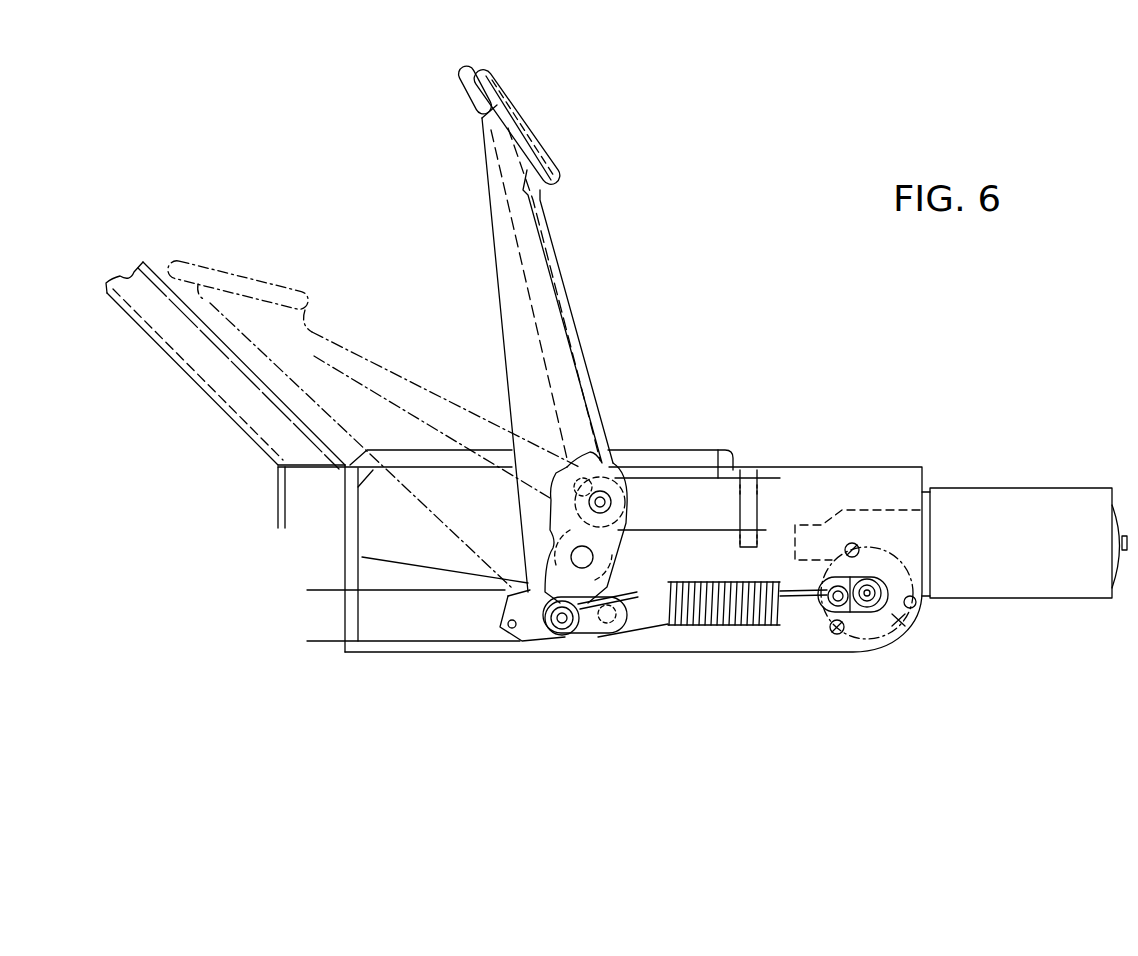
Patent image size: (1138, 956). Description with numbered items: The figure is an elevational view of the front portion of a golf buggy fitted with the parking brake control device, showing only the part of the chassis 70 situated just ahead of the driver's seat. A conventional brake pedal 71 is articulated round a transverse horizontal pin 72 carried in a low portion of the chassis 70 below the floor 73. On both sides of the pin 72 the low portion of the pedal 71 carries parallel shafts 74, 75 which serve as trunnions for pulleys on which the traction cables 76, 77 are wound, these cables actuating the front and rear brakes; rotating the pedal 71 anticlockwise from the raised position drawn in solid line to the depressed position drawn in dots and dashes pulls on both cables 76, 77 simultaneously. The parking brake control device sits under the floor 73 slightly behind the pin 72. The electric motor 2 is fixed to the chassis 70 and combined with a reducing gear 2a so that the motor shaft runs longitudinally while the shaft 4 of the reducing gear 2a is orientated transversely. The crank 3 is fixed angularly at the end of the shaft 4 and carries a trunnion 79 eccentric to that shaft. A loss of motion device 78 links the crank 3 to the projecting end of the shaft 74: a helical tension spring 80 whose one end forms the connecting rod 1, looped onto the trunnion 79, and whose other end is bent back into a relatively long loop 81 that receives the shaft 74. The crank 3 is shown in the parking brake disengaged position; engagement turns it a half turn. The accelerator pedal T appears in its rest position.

The accelerator pedal T is at (470, 88).
The brake pedal 71 is at (507, 245).
The chassis 70 is at (692, 440).
The floor 73 is at (858, 470).
The traction cable 76 is at (465, 652).
The traction cable 77 is at (719, 450).
The shaft 75 is at (607, 497).
The pin 72 is at (585, 557).
The shaft 74 is at (560, 632).
The loop 81 is at (623, 630).
The loss of motion device 78 is at (679, 640).
The helical tension spring 80 is at (713, 622).
The connecting rod 1 is at (793, 603).
The trunnion 79 is at (830, 612).
The crank 3 is at (847, 612).
The shaft 4 is at (875, 607).
The reducing gear 2a is at (915, 636).
The electric motor 2 is at (1051, 487).